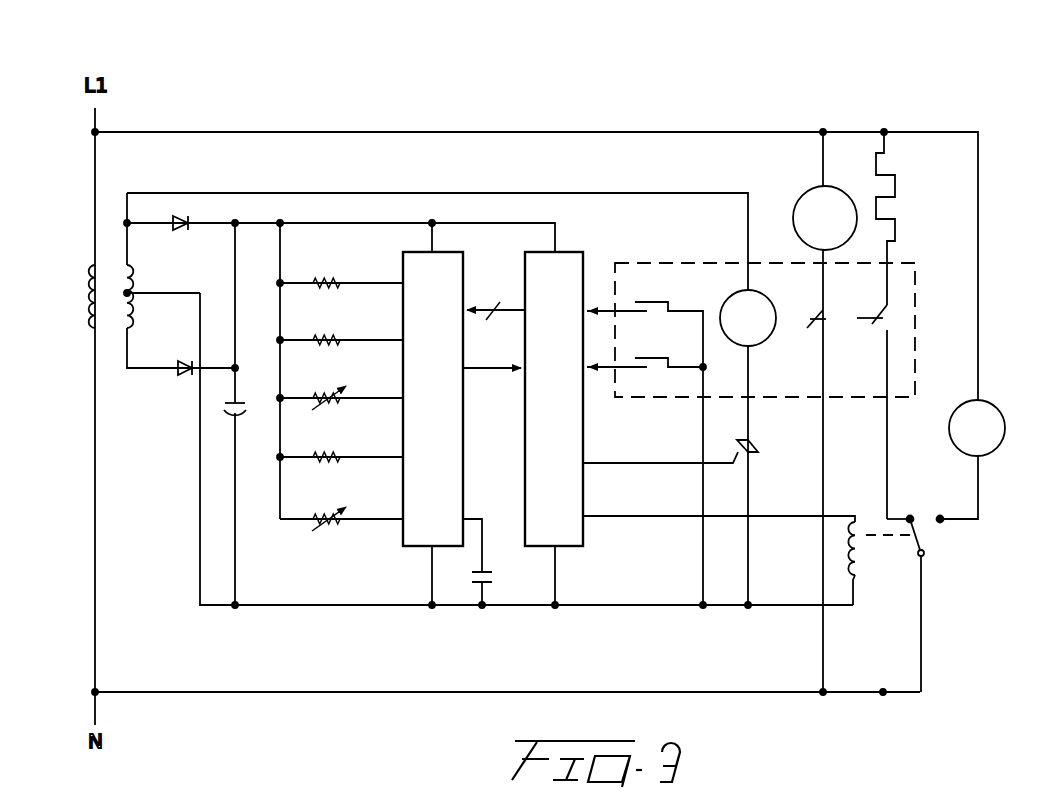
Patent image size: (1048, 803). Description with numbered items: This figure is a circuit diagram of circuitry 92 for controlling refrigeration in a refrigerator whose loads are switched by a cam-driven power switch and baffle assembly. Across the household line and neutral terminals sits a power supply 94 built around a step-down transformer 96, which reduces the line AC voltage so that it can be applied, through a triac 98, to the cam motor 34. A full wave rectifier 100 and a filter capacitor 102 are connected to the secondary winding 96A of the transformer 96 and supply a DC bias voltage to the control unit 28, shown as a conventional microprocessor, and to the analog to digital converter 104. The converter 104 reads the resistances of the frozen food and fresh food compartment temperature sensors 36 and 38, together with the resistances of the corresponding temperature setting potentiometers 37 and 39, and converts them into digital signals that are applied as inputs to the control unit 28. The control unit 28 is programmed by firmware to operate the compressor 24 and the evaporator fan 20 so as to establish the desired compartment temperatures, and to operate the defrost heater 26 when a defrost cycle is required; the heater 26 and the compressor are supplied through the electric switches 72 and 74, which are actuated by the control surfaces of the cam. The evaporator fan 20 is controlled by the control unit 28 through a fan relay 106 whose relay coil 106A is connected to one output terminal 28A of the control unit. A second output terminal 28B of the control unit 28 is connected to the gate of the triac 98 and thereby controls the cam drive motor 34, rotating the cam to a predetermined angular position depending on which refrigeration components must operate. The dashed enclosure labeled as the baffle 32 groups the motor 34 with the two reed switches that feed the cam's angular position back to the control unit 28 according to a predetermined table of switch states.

The circuitry 92 is at (654, 112).
The power supply 94 is at (180, 196).
The step-down transformer 96 is at (133, 406).
The secondary winding 96A is at (131, 306).
The full wave rectifier 100 is at (218, 258).
The filter capacitor 102 is at (248, 404).
The analog to digital converter 104 is at (417, 268).
The control unit 28 is at (561, 262).
The output terminal 28A is at (585, 516).
The second output terminal 28B is at (585, 462).
The frozen food compartment temperature sensor 36 is at (318, 338).
The temperature setting potentiometer 37 is at (320, 396).
The fresh food compartment temperature sensor 38 is at (319, 457).
The temperature setting potentiometer 39 is at (320, 518).
The baffle 32 is at (905, 261).
The cam motor 34 is at (767, 314).
The triac 98 is at (760, 446).
The compressor 24 is at (810, 200).
The electric switch 74 is at (812, 326).
The defrost heater 26 is at (894, 177).
The electric switch 72 is at (876, 311).
The evaporator fan 20 is at (993, 423).
The fan relay 106 is at (928, 536).
The relay coil 106A is at (866, 558).